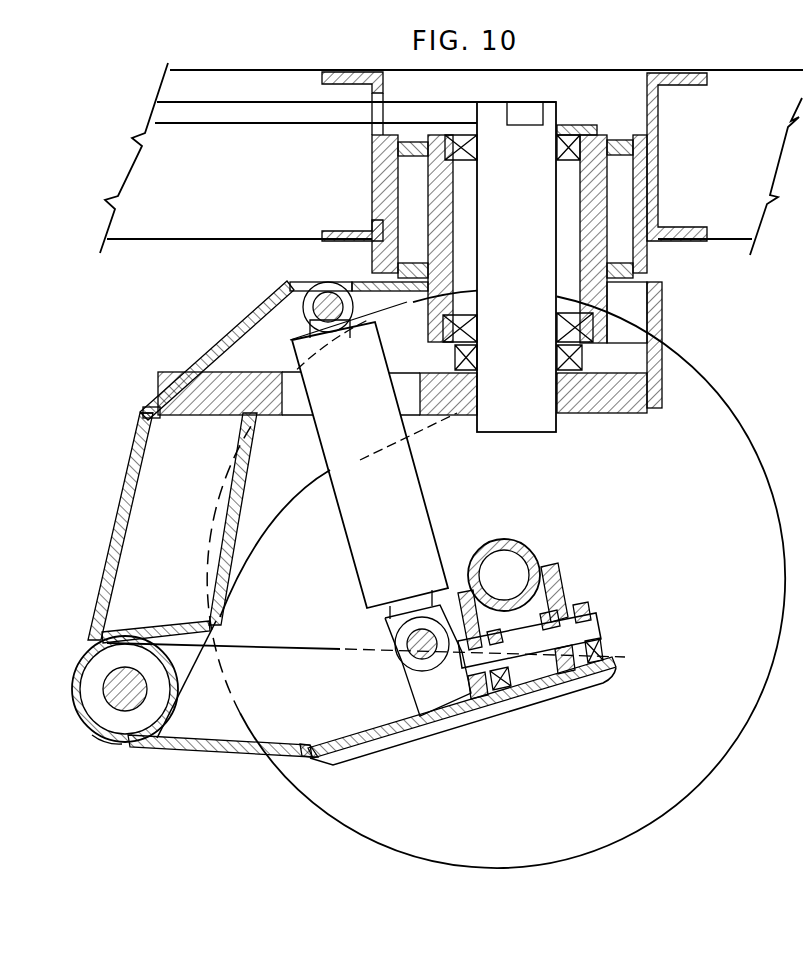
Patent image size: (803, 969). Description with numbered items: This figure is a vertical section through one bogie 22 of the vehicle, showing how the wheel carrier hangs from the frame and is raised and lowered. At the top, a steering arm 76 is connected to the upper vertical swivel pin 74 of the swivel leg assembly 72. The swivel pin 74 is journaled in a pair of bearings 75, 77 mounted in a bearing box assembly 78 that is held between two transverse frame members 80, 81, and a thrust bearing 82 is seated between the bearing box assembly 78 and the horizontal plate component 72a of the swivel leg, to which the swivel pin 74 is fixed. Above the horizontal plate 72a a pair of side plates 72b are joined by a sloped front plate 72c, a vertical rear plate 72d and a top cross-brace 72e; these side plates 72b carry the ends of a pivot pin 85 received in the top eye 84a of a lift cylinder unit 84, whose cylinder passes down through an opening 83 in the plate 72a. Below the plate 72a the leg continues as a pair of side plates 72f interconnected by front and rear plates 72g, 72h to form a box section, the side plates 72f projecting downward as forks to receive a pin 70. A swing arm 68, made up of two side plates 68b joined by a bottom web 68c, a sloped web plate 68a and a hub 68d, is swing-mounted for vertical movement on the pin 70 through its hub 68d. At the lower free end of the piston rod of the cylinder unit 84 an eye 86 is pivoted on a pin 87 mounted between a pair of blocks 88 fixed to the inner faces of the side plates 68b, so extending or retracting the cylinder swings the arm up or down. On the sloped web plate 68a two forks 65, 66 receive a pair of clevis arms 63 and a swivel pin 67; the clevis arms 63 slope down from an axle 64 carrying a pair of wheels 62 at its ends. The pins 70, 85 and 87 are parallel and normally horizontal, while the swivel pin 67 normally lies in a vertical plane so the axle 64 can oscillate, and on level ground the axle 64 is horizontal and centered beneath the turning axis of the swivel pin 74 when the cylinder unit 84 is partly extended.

The bogie 22 is at (174, 325).
The wheels 62 is at (330, 800).
The clevis arms 63 is at (554, 570).
The axle 64 is at (512, 540).
The fork 65 is at (580, 600).
The fork 66 is at (522, 696).
The swivel pin 67 is at (594, 628).
The swing arm 68 is at (191, 751).
The sloped web plate 68a is at (384, 738).
The side plates 68b is at (269, 698).
The bottom web 68c is at (266, 756).
The hub 68d is at (118, 740).
The pin 70 is at (142, 690).
The swivel leg assembly 72 is at (136, 462).
The horizontal plate component 72a is at (585, 400).
The side plates 72b is at (640, 303).
The sloped front plate 72c is at (265, 300).
The vertical rear plate 72d is at (656, 318).
The top cross-brace 72e is at (398, 286).
The side plates 72f is at (146, 441).
The front plate 72g is at (124, 516).
The rear plate 72h is at (234, 471).
The swivel pin 74 is at (489, 215).
The bearing 75 is at (572, 134).
The steering arm 76 is at (258, 118).
The bearing 77 is at (593, 343).
The bearing box assembly 78 is at (612, 187).
The transverse frame member 80 is at (372, 162).
The transverse frame member 81 is at (660, 138).
The thrust bearing 82 is at (455, 357).
The opening 83 is at (297, 418).
The lift cylinder unit 84 is at (360, 559).
The top eye 84a is at (318, 322).
The pivot pin 85 is at (332, 282).
The eye 86 is at (392, 632).
The pin 87 is at (406, 662).
The blocks 88 is at (430, 700).